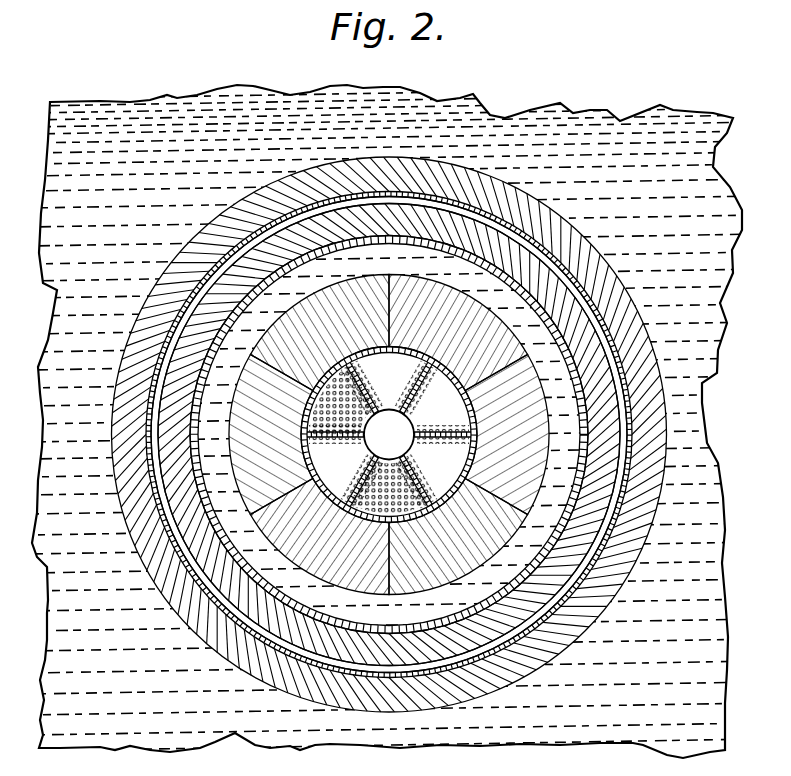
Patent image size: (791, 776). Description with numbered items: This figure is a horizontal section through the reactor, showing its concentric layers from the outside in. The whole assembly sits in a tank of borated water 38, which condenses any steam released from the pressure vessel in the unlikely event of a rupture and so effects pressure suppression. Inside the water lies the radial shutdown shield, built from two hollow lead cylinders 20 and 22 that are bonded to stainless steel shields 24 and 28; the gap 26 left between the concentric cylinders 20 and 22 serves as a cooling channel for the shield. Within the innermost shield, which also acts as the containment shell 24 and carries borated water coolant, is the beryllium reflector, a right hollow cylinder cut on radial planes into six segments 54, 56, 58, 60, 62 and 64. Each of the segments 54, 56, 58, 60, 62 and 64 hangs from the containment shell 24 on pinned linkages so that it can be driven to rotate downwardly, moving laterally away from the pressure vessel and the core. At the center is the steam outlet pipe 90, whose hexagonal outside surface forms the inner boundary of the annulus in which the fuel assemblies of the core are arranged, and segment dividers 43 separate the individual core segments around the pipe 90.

The hollow lead cylinder 20 is at (648, 467).
The hollow lead cylinder 22 is at (600, 385).
The stainless steel shield 24 is at (588, 408).
The gap 26 is at (622, 428).
The stainless steel shield 28 is at (627, 437).
The borated water 38 is at (698, 130).
The segment dividers 43 is at (451, 372).
The reflector segment 54 is at (468, 346).
The reflector segment 56 is at (520, 452).
The reflector segment 58 is at (450, 561).
The reflector segment 60 is at (320, 543).
The reflector segment 62 is at (278, 457).
The reflector segment 64 is at (333, 338).
The steam outlet pipe 90 is at (401, 444).